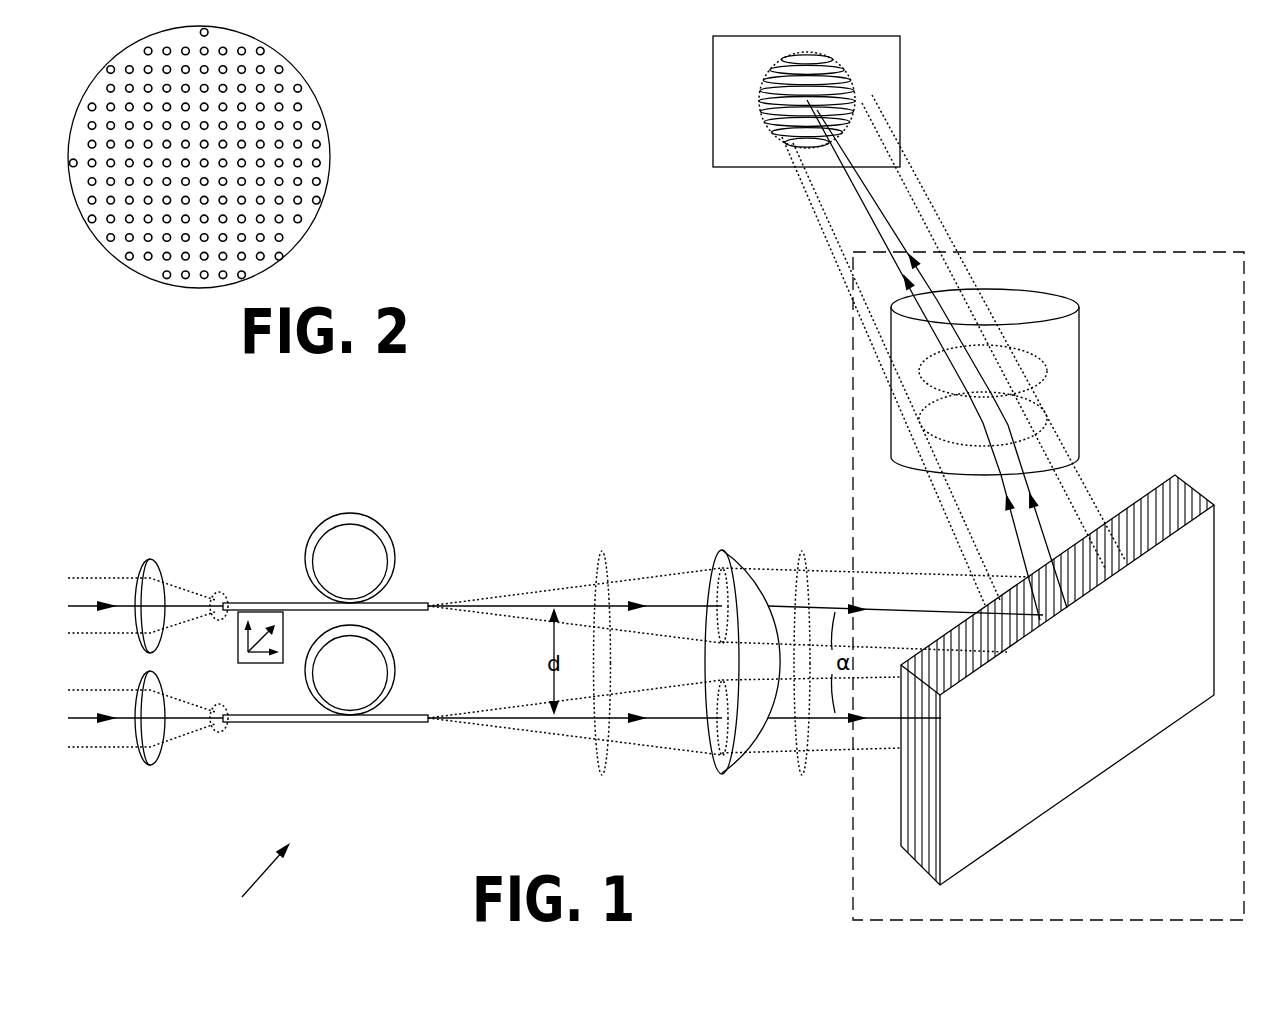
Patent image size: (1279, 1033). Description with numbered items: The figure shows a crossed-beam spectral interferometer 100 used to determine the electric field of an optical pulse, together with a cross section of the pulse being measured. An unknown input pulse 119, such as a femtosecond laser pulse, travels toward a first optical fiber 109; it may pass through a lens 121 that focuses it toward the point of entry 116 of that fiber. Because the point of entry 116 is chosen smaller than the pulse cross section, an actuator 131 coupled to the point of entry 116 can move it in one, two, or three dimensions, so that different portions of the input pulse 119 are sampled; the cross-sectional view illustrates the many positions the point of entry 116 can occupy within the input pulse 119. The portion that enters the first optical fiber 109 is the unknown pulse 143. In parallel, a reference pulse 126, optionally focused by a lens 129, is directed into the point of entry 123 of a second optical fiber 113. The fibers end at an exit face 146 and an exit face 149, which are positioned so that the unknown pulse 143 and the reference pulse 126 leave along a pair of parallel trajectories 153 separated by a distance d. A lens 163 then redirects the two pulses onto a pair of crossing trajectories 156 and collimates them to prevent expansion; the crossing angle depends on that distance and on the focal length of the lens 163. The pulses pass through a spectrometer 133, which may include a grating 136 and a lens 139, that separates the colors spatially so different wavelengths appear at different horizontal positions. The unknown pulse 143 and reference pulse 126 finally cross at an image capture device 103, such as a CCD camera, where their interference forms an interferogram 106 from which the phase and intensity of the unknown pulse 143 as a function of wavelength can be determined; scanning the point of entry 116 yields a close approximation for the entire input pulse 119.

In FIG. 1, the interferometer 100 is at (243, 884).
In FIG. 1, the image capture device 103 is at (890, 92).
In FIG. 1, the interferogram 106 is at (780, 90).
In FIG. 1, the first optical fiber 109 is at (348, 513).
In FIG. 1, the second optical fiber 113 is at (353, 723).
In FIG. 2, the point of entry 116 is at (320, 163).
In FIG. 1, the point of entry 116 is at (213, 598).
In FIG. 2, the input pulse 119 is at (320, 101).
In FIG. 1, the input pulse 119 is at (110, 593).
In FIG. 1, the lens 121 is at (150, 574).
In FIG. 1, the point of entry 123 is at (218, 728).
In FIG. 1, the reference pulse 126 is at (88, 737).
In FIG. 1, the lens 129 is at (152, 688).
In FIG. 1, the actuator 131 is at (245, 664).
In FIG. 1, the spectrometer 133 is at (1057, 252).
In FIG. 1, the grating 136 is at (1062, 783).
In FIG. 1, the lens 139 is at (1067, 343).
In FIG. 1, the unknown pulse 143 is at (650, 577).
In FIG. 1, the exit face 146 is at (433, 603).
In FIG. 1, the exit face 149 is at (433, 723).
In FIG. 1, the parallel trajectories 153 is at (602, 552).
In FIG. 1, the crossing trajectories 156 is at (802, 552).
In FIG. 1, the lens 163 is at (722, 550).